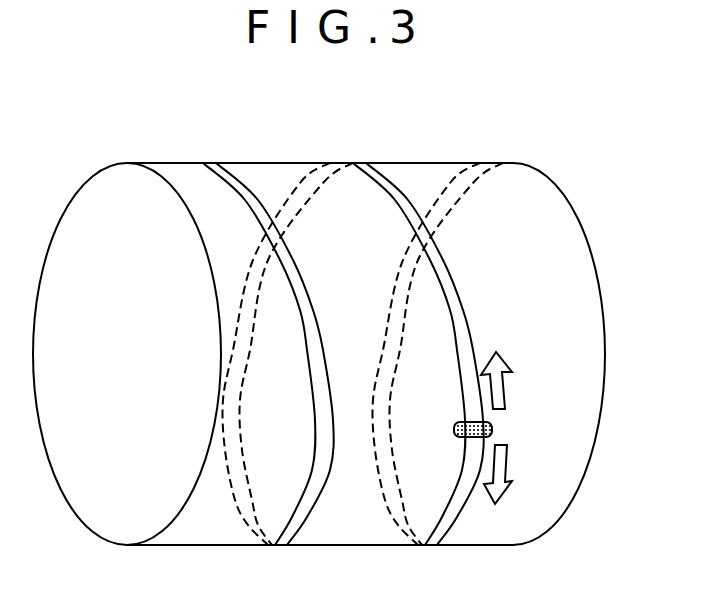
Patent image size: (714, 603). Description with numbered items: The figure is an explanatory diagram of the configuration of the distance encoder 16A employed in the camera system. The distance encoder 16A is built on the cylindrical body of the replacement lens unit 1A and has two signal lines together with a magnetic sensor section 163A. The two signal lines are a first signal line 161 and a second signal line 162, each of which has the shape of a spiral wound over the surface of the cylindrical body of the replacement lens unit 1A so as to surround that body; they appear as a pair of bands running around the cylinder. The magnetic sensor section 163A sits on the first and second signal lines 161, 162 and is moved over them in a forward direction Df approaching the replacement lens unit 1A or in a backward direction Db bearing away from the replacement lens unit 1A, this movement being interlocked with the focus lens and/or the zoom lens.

The replacement lens unit 1A is at (88, 109).
The distance encoder 16A is at (336, 317).
The first signal line 161 is at (309, 363).
The second signal line 162 is at (312, 303).
The magnetic sensor section 163A is at (453, 430).
The forward direction Df is at (508, 381).
The backward direction Db is at (508, 460).